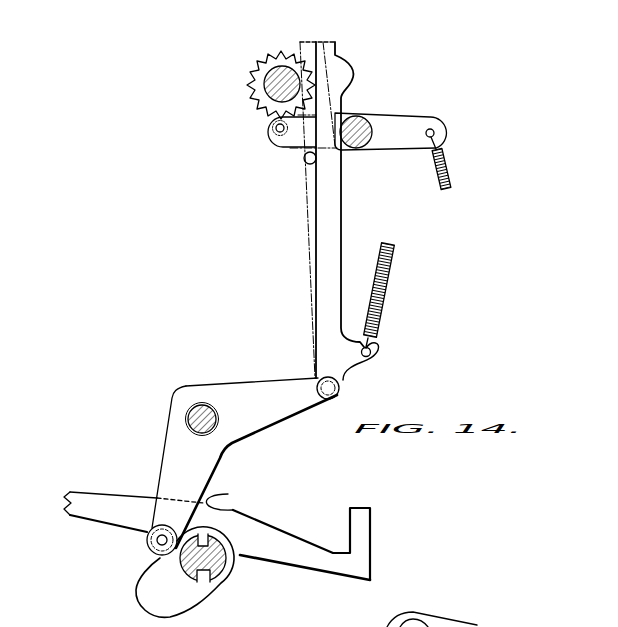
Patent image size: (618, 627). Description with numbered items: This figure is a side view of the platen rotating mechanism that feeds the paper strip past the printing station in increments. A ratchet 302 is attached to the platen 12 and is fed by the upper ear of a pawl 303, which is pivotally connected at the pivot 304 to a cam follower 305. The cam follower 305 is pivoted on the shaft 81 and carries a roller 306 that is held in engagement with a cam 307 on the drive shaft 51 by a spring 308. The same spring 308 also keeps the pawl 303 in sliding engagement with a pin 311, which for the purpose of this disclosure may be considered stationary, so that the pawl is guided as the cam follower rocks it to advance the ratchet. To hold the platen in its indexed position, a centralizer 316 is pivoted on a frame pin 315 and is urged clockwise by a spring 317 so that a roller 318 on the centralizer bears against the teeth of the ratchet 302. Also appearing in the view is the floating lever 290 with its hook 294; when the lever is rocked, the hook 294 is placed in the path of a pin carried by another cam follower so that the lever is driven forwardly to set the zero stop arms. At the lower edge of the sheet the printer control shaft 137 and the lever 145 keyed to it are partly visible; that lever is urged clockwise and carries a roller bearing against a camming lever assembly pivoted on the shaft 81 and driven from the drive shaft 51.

The platen 12 is at (263, 76).
The drive shaft 51 is at (237, 573).
The shaft 81 is at (201, 410).
The printer control shaft 137 is at (441, 610).
The lever 145 is at (486, 626).
The floating lever 290 is at (292, 521).
The hook 294 is at (230, 502).
The ratchet 302 is at (286, 50).
The pawl 303 is at (338, 58).
The pivot 304 is at (344, 392).
The cam follower 305 is at (186, 394).
The roller 306 is at (150, 543).
The cam 307 is at (148, 580).
The spring 308 is at (393, 289).
The pin 311 is at (304, 158).
The frame pin 315 is at (350, 116).
The centralizer 316 is at (433, 119).
The spring 317 is at (449, 151).
The roller 318 is at (272, 127).